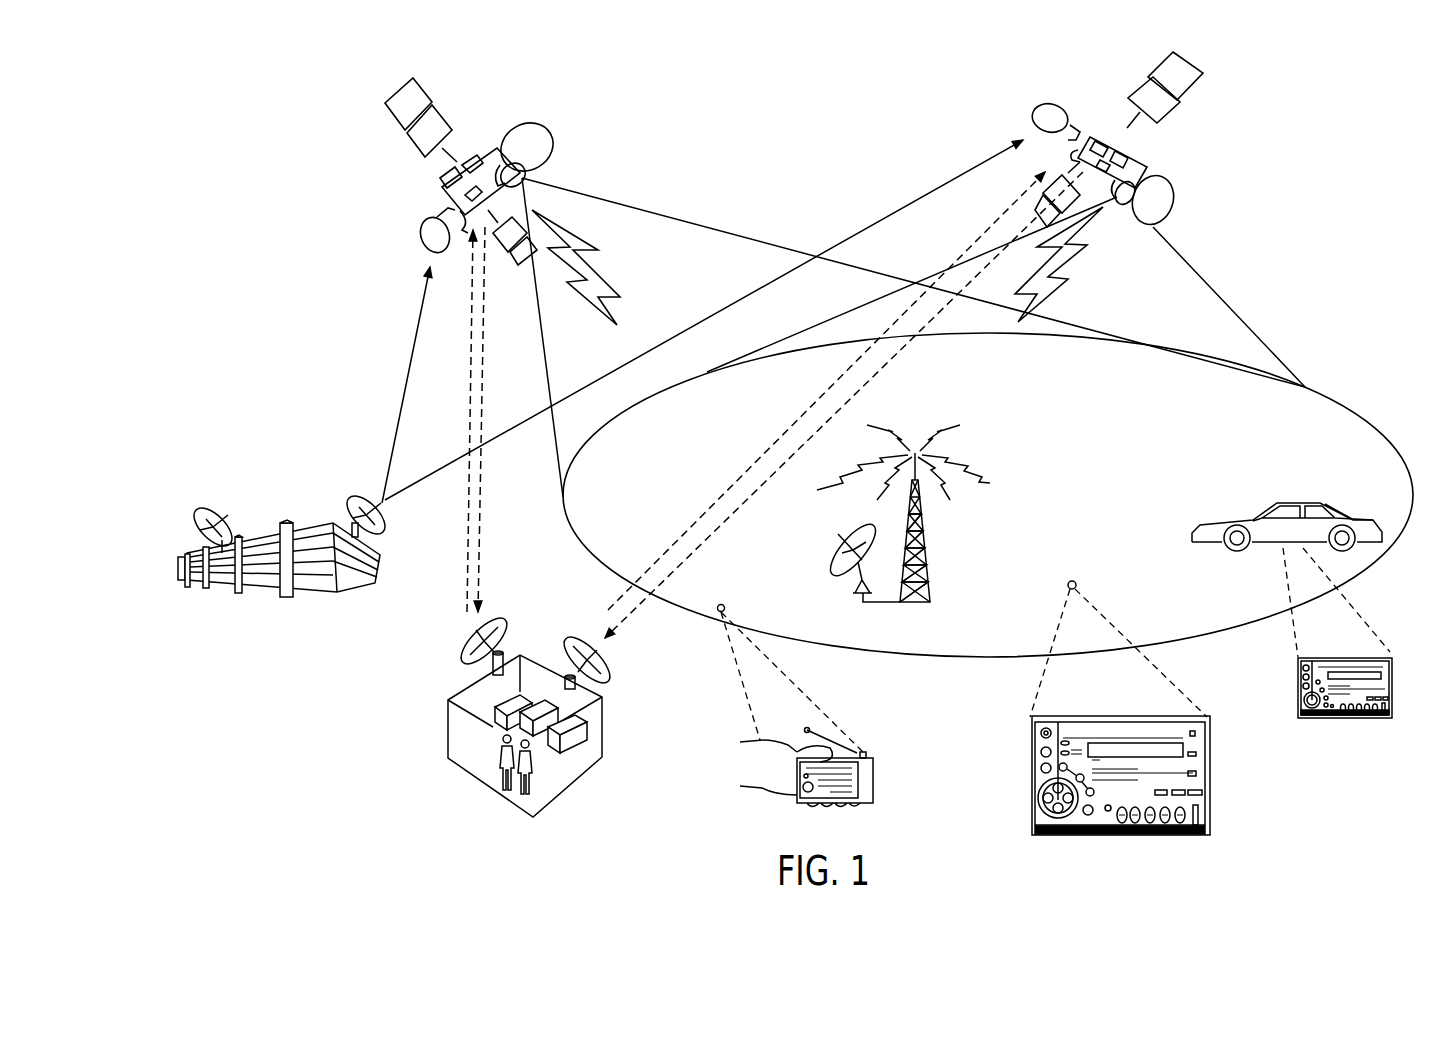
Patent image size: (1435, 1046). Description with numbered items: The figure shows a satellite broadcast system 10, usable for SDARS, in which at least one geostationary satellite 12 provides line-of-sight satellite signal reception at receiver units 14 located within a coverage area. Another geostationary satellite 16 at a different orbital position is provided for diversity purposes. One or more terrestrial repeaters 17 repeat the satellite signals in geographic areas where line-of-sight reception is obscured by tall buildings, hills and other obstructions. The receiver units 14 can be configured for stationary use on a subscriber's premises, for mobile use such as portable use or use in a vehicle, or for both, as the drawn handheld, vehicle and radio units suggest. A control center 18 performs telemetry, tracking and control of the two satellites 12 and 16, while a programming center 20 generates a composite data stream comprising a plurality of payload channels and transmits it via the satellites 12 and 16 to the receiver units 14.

The satellite broadcast system 10 is at (1305, 212).
The geostationary satellite 12 is at (557, 142).
The receiver units 14 is at (725, 605).
The geostationary satellite 16 is at (1173, 200).
The terrestrial repeater 17 is at (925, 556).
The control center 18 is at (602, 730).
The programming center 20 is at (377, 578).